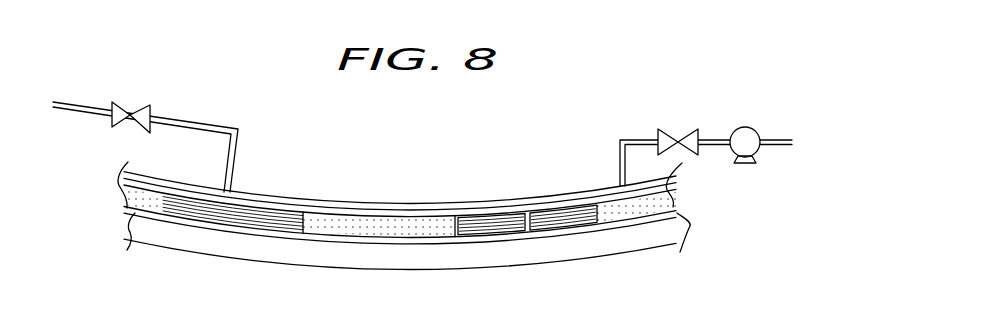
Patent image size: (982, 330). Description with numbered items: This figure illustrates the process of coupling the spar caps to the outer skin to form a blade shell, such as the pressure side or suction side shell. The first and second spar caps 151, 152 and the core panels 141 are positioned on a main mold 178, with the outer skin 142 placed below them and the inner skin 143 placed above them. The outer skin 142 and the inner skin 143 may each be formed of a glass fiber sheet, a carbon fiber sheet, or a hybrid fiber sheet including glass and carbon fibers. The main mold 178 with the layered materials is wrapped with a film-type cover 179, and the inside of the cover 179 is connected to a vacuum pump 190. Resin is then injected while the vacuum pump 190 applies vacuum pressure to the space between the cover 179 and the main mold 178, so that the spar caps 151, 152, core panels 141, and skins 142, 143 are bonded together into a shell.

The core panel 141 is at (348, 230).
The outer skin 142 is at (393, 239).
The inner skin 143 is at (411, 200).
The first spar cap 151 is at (492, 230).
The second spar cap 152 is at (228, 222).
The main mold 178 is at (575, 252).
The cover 179 is at (525, 197).
The vacuum pump 190 is at (748, 127).